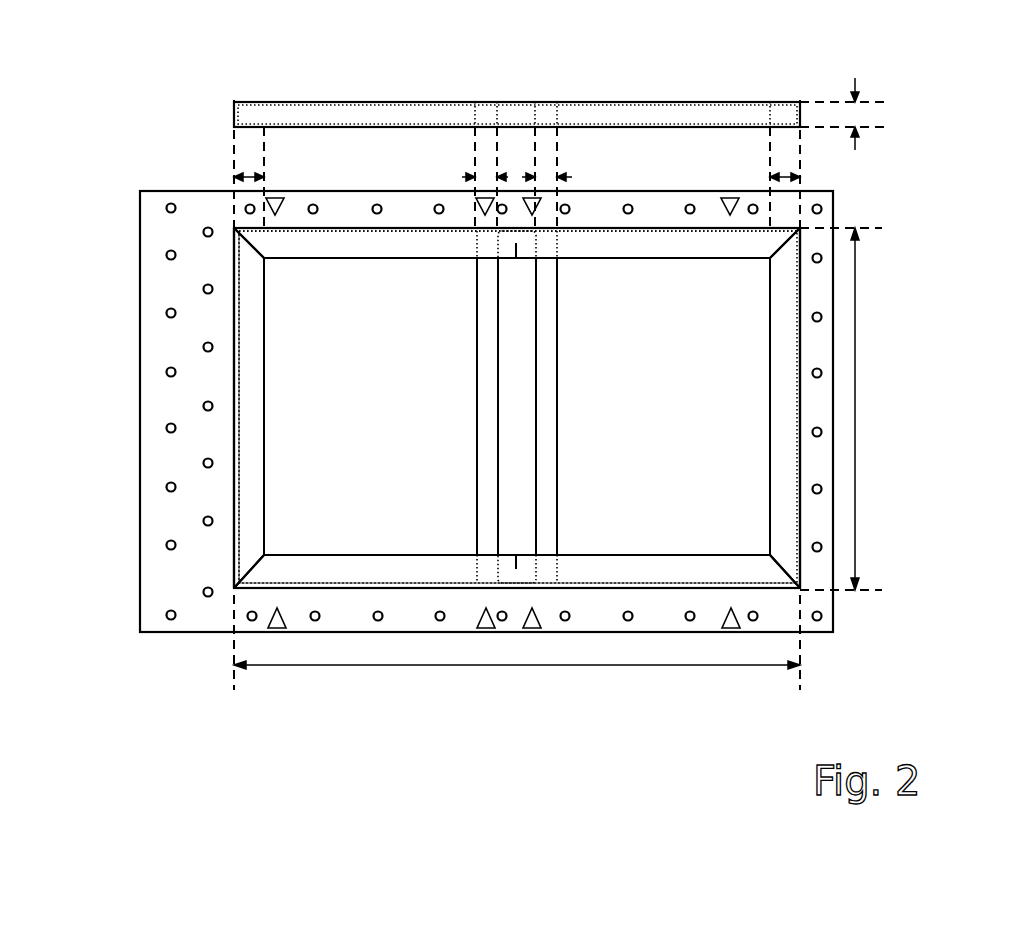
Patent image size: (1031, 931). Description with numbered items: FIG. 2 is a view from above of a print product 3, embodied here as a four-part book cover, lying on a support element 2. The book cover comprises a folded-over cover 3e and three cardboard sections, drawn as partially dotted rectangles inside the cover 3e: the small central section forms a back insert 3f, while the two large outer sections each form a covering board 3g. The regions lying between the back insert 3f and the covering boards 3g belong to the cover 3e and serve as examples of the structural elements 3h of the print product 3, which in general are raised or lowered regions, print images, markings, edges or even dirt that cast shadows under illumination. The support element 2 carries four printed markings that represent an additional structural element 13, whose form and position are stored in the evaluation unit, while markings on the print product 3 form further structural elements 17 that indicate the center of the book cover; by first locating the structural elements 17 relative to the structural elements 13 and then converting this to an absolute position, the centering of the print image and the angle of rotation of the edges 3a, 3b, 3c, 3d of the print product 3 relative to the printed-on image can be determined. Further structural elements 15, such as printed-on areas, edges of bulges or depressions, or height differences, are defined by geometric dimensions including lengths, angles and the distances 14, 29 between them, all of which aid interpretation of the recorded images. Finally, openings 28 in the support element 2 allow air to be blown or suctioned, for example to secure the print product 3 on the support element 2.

The support element 2 is at (192, 202).
The print product 3 is at (315, 268).
The edge 3a is at (835, 302).
The edge 3b is at (232, 427).
The edge 3c is at (603, 190).
The edge 3d is at (750, 635).
The cover 3e is at (242, 500).
The back insert 3f is at (528, 420).
The covering board 3g is at (346, 420).
The structural elements 3h is at (485, 348).
The structural element 13 is at (731, 628).
The distances 14 is at (855, 110).
The structural elements 15 is at (810, 588).
The structural elements 17 is at (517, 567).
The openings 28 is at (178, 621).
The distances 29 is at (762, 665).